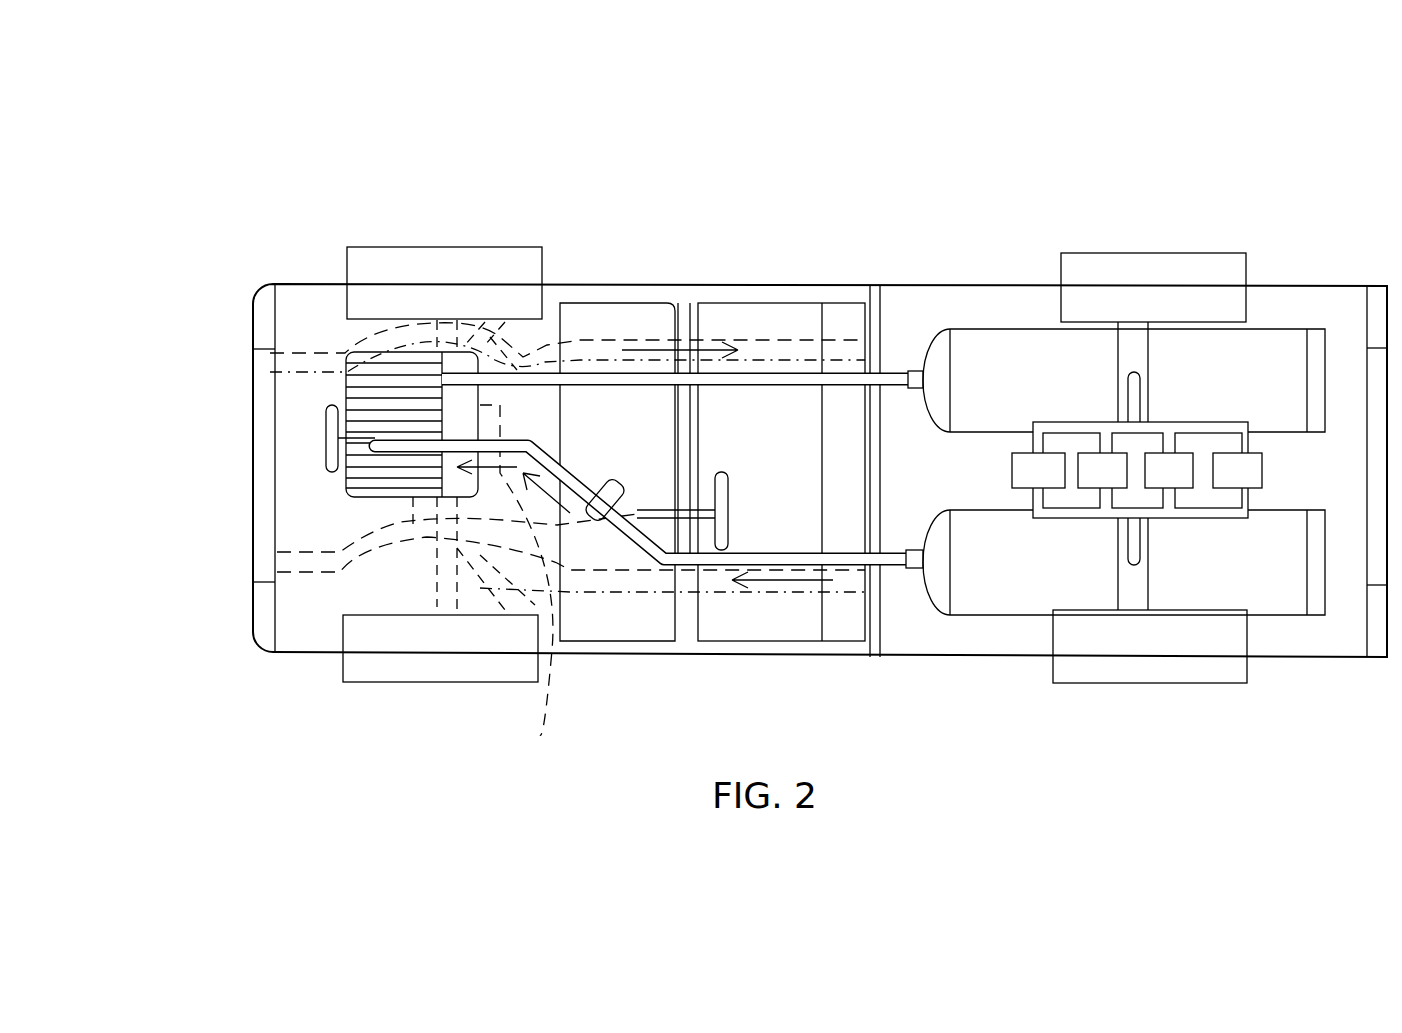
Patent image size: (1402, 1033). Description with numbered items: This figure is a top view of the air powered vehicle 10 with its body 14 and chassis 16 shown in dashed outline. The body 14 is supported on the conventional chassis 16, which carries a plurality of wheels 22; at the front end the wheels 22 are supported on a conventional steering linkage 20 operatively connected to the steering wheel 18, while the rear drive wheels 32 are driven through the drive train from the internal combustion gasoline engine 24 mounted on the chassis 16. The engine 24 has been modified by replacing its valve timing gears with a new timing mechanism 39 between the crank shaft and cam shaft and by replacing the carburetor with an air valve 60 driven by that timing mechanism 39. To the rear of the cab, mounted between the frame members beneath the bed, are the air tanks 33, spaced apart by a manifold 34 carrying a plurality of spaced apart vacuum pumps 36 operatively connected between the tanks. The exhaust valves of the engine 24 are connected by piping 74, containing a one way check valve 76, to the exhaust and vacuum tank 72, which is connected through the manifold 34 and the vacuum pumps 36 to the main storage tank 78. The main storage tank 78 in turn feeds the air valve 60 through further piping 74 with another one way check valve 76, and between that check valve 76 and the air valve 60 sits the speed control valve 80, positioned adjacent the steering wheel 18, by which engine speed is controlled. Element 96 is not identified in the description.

The vehicle 10 is at (232, 242).
The body 14 is at (620, 285).
The chassis 16 is at (633, 337).
The steering wheel 18 is at (727, 500).
The steering linkage 20 is at (571, 593).
The wheels 22 is at (412, 275).
The internal combustion gasoline engine 24 is at (353, 365).
The rear drive wheels 32 is at (1105, 253).
The air tanks 33 is at (968, 545).
The manifold 34 is at (1072, 422).
The vacuum pumps 36 is at (1022, 462).
The timing mechanism 39 is at (326, 438).
The air valve 60 is at (372, 440).
The exhaust and vacuum tank 72 is at (1257, 347).
The piping 74 is at (592, 380).
The one way check valve 76 is at (877, 373).
The main storage tank 78 is at (965, 598).
The speed control valve 80 is at (583, 483).
The cross member 96 is at (662, 335).